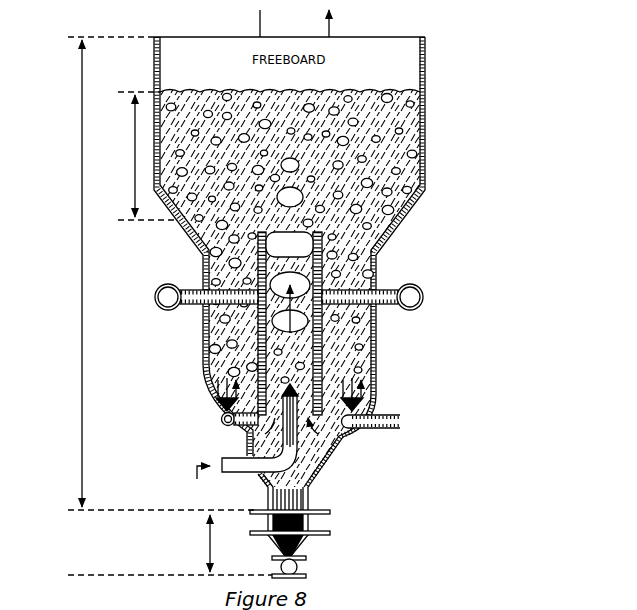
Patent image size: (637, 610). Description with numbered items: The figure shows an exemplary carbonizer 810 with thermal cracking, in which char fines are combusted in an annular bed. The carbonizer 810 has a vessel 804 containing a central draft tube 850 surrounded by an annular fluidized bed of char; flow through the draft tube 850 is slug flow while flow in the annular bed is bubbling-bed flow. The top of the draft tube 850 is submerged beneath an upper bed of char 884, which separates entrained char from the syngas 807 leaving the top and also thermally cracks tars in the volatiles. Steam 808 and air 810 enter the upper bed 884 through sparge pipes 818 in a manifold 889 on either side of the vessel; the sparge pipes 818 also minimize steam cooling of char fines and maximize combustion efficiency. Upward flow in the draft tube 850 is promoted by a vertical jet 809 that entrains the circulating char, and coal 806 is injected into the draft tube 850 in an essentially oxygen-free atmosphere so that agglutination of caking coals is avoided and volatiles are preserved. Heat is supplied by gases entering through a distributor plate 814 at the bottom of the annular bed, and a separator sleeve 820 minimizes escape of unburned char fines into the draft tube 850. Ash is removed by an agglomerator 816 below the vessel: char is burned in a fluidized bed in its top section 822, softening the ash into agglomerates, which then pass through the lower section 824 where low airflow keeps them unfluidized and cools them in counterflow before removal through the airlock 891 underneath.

The reactor vessel 804 is at (206, 349).
The draft tube 850 is at (335, 312).
The sparge pipes 818 is at (190, 290).
The steam 808 is at (161, 289).
The manifold 889 is at (419, 289).
The separator sleeve 820 is at (366, 384).
The distributor plate 814 is at (366, 412).
The vertical jet 809 is at (299, 450).
The coal 806 is at (198, 482).
The top section 822 is at (268, 499).
The lower section 824 is at (272, 550).
The ball valve 891 is at (300, 569).
The syngas 807 is at (333, 12).
The carbonizer 810 is at (82, 277).
The upper bed of char 884 is at (135, 160).
The agglomerator 816 is at (210, 546).